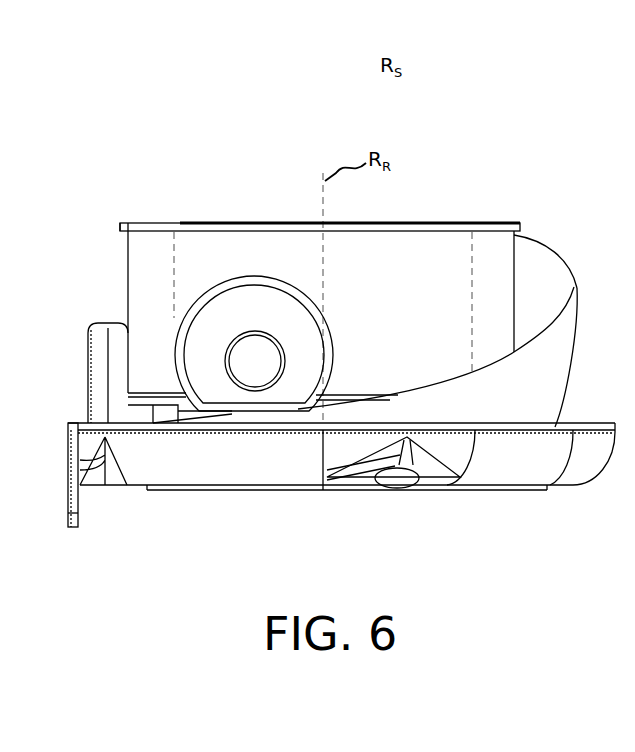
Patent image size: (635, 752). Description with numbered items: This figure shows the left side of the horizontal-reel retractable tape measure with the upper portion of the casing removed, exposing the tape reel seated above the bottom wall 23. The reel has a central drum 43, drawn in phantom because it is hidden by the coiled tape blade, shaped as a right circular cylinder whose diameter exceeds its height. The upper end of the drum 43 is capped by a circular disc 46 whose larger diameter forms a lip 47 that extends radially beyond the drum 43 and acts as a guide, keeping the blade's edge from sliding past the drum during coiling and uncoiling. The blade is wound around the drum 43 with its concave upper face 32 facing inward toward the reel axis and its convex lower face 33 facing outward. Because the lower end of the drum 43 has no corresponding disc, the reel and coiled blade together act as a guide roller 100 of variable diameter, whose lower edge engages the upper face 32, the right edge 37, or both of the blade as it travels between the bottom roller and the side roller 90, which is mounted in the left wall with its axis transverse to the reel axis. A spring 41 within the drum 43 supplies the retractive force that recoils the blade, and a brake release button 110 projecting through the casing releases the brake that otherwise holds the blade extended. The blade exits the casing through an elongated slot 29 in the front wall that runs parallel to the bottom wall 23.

The guide roller 100 is at (511, 183).
The spring 41 is at (396, 204).
The circular disc 46 is at (256, 224).
The lip 47 is at (143, 228).
The central drum 43 is at (471, 301).
The upper face 32 is at (554, 303).
The lower face 33 is at (521, 401).
The right edge 37 is at (546, 331).
The side roller 90 is at (219, 381).
The brake release button 110 is at (101, 336).
The elongated slot 29 is at (73, 492).
The bottom wall 23 is at (325, 513).